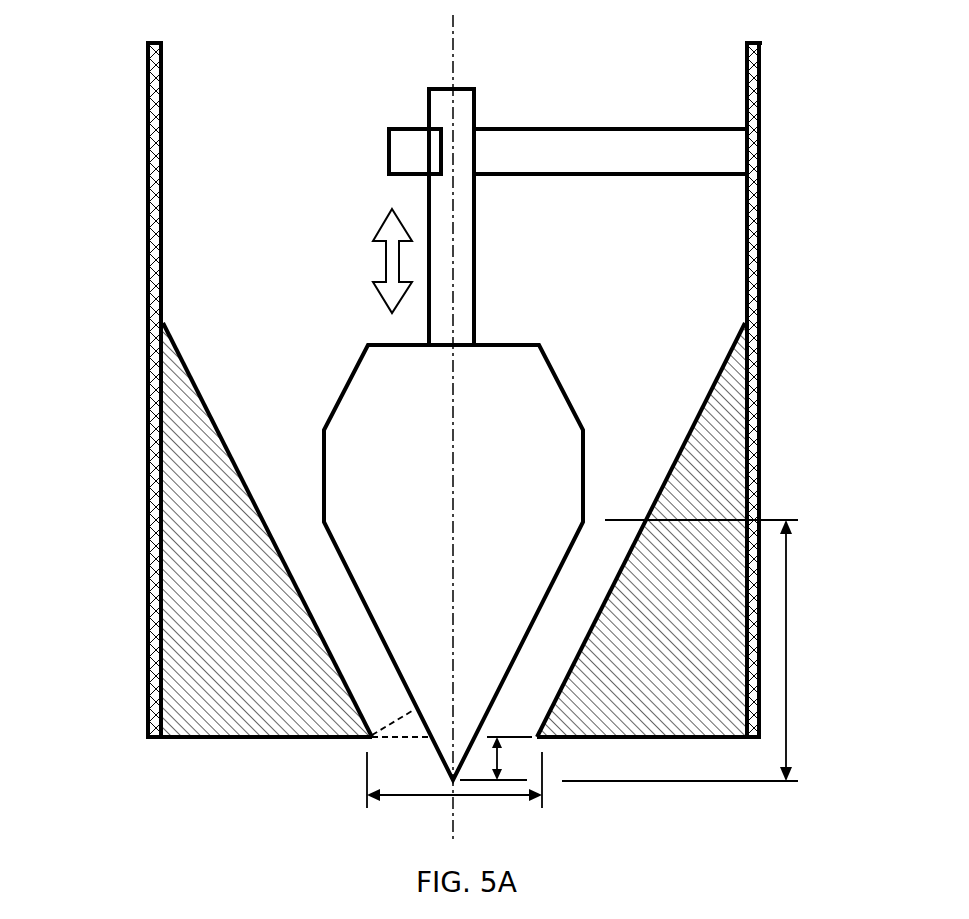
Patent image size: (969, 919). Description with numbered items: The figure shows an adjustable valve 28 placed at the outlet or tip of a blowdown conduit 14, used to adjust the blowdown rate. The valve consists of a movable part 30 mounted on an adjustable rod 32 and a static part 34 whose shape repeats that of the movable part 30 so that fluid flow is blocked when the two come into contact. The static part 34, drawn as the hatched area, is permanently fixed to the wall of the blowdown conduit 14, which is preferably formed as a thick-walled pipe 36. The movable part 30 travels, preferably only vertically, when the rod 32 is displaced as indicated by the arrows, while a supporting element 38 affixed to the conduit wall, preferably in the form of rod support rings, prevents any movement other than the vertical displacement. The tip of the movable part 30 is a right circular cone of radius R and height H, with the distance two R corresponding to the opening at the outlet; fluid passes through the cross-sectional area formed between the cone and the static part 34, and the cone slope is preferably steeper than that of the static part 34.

The adjustable valve 28 is at (30, 198).
The blowdown conduit 14 is at (761, 97).
The supporting element 38 is at (545, 127).
The adjustable rod 32 is at (477, 217).
The movable part 30 is at (558, 380).
The static part 34 is at (210, 580).
The thick-walled pipe 36 is at (146, 633).